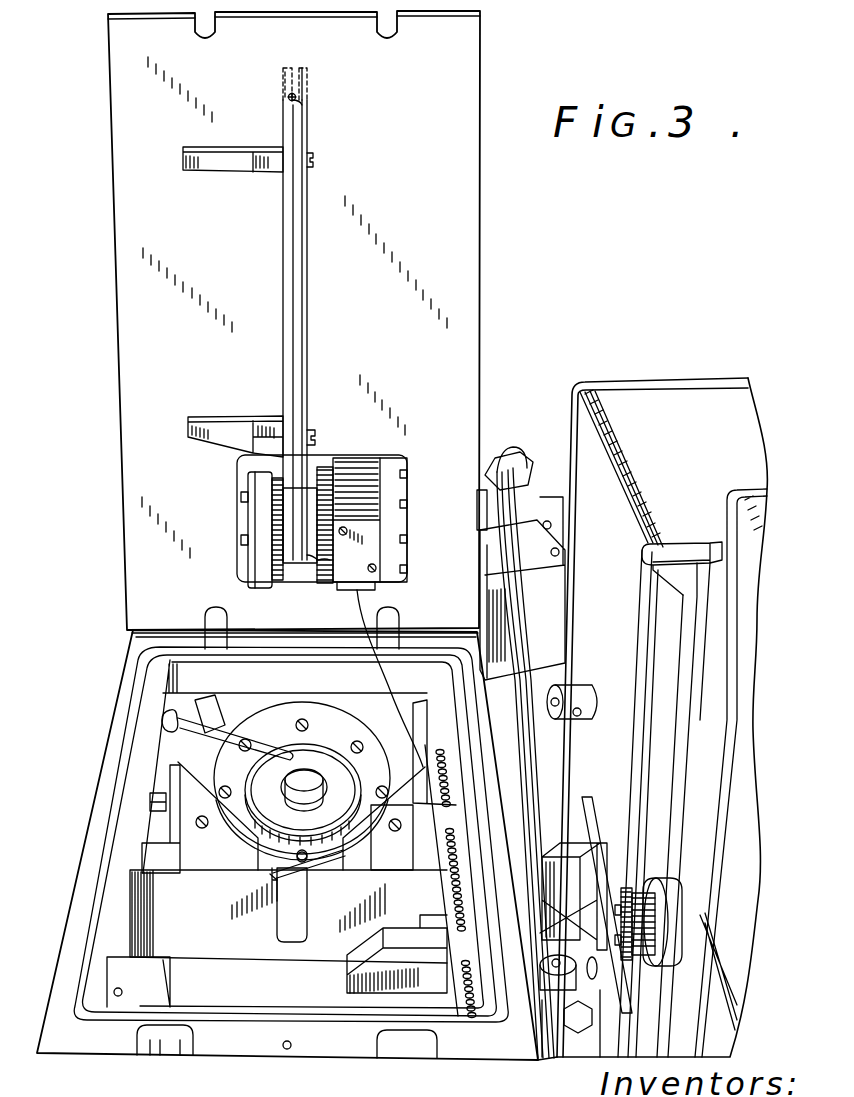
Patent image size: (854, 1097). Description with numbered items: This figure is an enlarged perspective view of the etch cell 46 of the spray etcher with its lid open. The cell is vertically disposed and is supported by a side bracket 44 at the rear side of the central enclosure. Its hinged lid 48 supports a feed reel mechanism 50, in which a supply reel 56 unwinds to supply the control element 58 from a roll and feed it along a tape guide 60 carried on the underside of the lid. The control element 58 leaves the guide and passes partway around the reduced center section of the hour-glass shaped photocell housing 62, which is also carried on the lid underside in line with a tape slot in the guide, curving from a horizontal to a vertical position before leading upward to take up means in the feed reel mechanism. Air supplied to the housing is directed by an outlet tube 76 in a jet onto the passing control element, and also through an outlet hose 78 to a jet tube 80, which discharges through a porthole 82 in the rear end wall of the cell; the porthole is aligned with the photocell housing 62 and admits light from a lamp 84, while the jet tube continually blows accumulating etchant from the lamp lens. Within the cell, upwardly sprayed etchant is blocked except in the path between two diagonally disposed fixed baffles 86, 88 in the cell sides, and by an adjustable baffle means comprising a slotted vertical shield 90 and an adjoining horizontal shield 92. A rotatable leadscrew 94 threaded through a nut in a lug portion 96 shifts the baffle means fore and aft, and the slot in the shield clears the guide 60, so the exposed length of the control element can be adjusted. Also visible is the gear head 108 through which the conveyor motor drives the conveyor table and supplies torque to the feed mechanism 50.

The side bracket 44 is at (575, 880).
The etch cell 46 is at (110, 757).
The hinged lid 48 is at (466, 326).
The feed reel mechanism 50 is at (312, 75).
The supply reel 56 is at (300, 90).
The control element 58 is at (296, 86).
The tape guide 60 is at (307, 300).
The photocell housing 62 is at (391, 522).
The outlet tube 76 is at (313, 566).
The outlet hose 78 is at (380, 612).
The jet tube 80 is at (255, 745).
The porthole 82 is at (332, 800).
The lamp 84 is at (280, 806).
The fixed baffle 86 is at (180, 832).
The fixed baffle 88 is at (375, 838).
The slotted vertical shield 90 is at (140, 910).
The horizontal shield 92 is at (250, 993).
The leadscrew 94 is at (450, 893).
The lug portion 96 is at (428, 960).
The gear head 108 is at (655, 885).